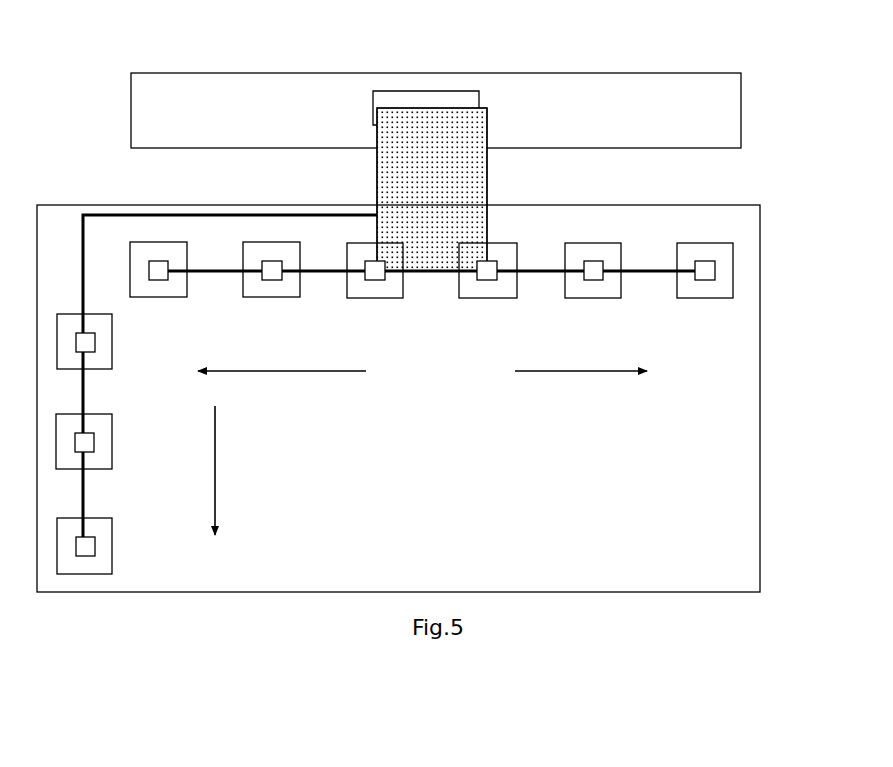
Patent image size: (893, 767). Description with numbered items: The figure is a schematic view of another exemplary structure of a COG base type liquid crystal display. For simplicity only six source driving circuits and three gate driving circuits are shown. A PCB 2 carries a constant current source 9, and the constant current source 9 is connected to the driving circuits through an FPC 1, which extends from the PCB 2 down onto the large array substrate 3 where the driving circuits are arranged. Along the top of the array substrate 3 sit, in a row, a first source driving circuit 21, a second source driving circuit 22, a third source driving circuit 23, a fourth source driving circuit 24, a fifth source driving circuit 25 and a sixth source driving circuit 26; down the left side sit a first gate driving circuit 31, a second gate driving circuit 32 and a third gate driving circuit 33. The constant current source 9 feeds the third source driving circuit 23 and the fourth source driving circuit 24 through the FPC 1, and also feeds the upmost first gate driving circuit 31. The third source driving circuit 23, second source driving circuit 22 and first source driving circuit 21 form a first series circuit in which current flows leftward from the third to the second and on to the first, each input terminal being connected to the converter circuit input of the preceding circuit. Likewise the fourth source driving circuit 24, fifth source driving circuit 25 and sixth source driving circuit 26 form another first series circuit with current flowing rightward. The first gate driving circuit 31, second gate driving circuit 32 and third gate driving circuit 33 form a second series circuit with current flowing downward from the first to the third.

The FPC 1 is at (487, 176).
The PCB 2 is at (338, 72).
The substrate / sensor board 3 is at (705, 404).
The constant current source 9 is at (467, 99).
The first source driving circuit 21 is at (157, 292).
The second source driving circuit 22 is at (268, 292).
The third source driving circuit 23 is at (388, 298).
The fourth source driving circuit 24 is at (478, 298).
The fifth source driving circuit 25 is at (585, 298).
The sixth source driving circuit 26 is at (690, 298).
The first gate driving circuit 31 is at (112, 366).
The second gate driving circuit 32 is at (112, 442).
The third gate driving circuit 33 is at (112, 534).